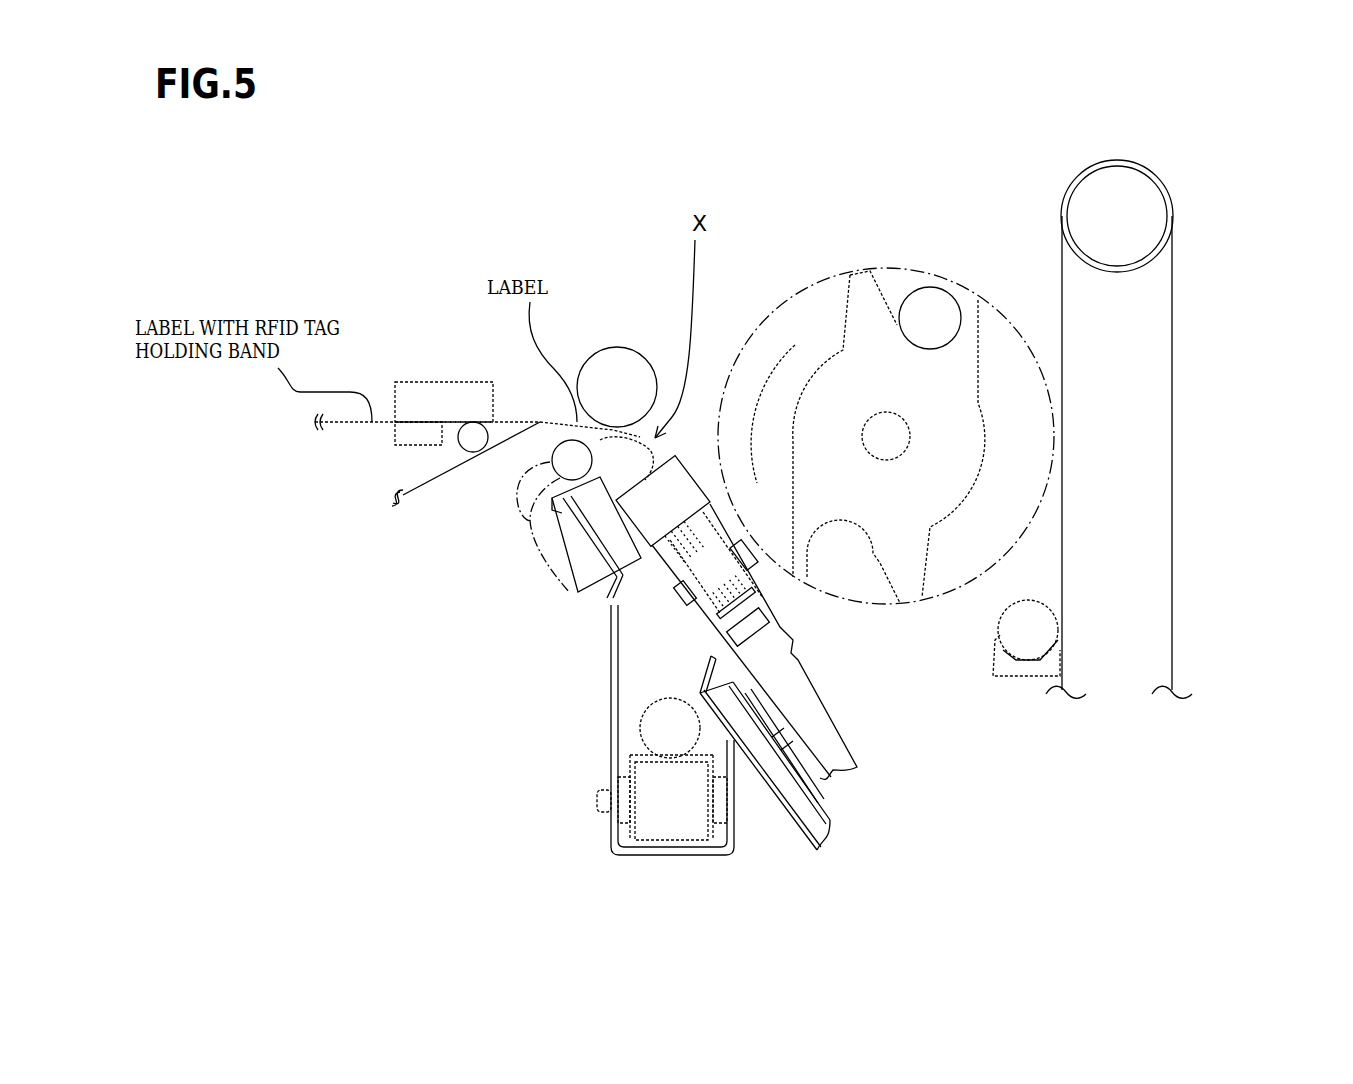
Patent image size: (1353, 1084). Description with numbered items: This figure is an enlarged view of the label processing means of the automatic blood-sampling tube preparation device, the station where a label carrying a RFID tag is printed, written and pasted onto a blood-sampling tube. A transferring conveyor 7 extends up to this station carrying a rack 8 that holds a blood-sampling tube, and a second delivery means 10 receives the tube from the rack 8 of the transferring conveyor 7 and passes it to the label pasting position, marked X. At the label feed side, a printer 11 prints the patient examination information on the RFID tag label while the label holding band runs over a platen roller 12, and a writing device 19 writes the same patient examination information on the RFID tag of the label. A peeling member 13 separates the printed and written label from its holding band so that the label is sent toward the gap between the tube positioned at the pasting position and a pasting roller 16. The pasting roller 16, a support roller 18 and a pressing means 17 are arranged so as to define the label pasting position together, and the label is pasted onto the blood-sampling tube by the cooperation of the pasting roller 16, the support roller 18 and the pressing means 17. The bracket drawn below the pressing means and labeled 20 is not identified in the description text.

The transferring conveyor 7 is at (1145, 535).
The rack 8 is at (1013, 678).
The second delivery means 10 is at (955, 415).
The printer 11 is at (414, 382).
The platen roller 12 is at (472, 436).
The peeling member 13 is at (508, 437).
The pasting roller 16 is at (611, 360).
The pressing means 17 is at (663, 570).
The support roller 18 is at (530, 520).
The writing device 19 is at (395, 437).
The drive unit 20 is at (670, 830).